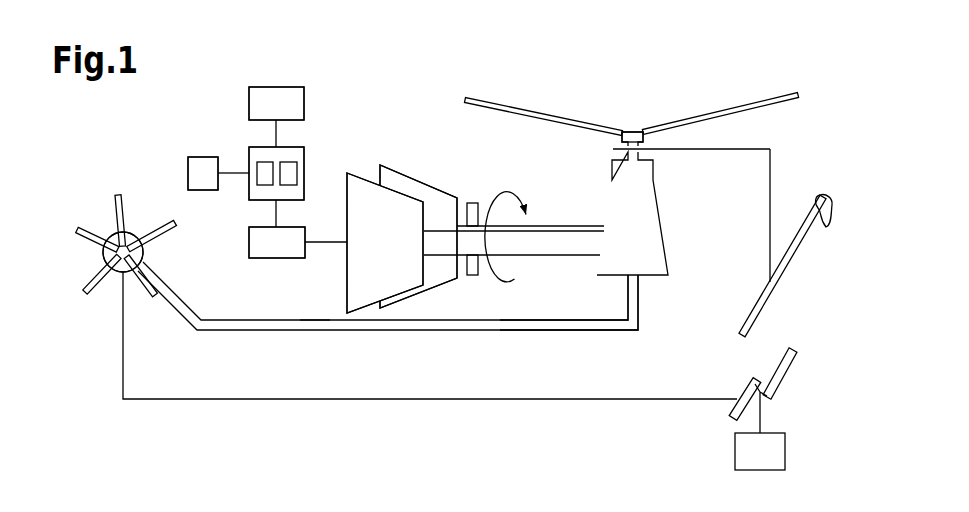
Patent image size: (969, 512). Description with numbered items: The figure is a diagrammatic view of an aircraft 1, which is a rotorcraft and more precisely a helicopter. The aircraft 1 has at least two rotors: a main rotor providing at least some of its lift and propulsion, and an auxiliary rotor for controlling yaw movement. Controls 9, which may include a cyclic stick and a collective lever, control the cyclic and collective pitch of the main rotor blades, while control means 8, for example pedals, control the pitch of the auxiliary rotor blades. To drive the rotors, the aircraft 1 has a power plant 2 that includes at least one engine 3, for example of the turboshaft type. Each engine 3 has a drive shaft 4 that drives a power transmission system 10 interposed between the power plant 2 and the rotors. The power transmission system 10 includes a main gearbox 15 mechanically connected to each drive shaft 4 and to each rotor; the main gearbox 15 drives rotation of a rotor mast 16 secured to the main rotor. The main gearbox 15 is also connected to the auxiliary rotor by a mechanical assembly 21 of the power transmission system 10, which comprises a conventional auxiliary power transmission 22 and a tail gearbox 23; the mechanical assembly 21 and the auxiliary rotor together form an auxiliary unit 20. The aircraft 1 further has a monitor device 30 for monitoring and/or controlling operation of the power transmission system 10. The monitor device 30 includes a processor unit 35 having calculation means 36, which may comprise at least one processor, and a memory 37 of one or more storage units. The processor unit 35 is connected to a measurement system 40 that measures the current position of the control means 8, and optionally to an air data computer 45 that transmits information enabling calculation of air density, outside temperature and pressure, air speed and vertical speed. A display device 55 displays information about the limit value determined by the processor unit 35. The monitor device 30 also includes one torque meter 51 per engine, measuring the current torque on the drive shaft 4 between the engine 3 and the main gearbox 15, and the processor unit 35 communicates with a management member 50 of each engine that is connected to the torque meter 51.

The aircraft 1 is at (105, 407).
The power plant 2 is at (373, 135).
The engine 3 is at (358, 180).
The drive shaft 4 is at (575, 210).
The control means 8 is at (800, 370).
The controls 9 is at (838, 207).
The power transmission system 10 is at (548, 347).
The main gearbox 15 is at (655, 203).
The rotor mast 16 is at (613, 150).
The auxiliary unit 20 is at (390, 352).
The mechanical assembly 21 is at (312, 340).
The auxiliary power transmission 22 is at (257, 323).
The tail gearbox 23 is at (141, 240).
The monitor device 30 is at (314, 84).
The processor unit 35 is at (246, 152).
The calculation means 36 is at (257, 180).
The memory 37 is at (297, 168).
The measurement system 40 is at (785, 448).
The air data computer 45 is at (188, 172).
The management member 50 is at (265, 258).
The torque meter 51 is at (468, 204).
The display device 55 is at (262, 86).